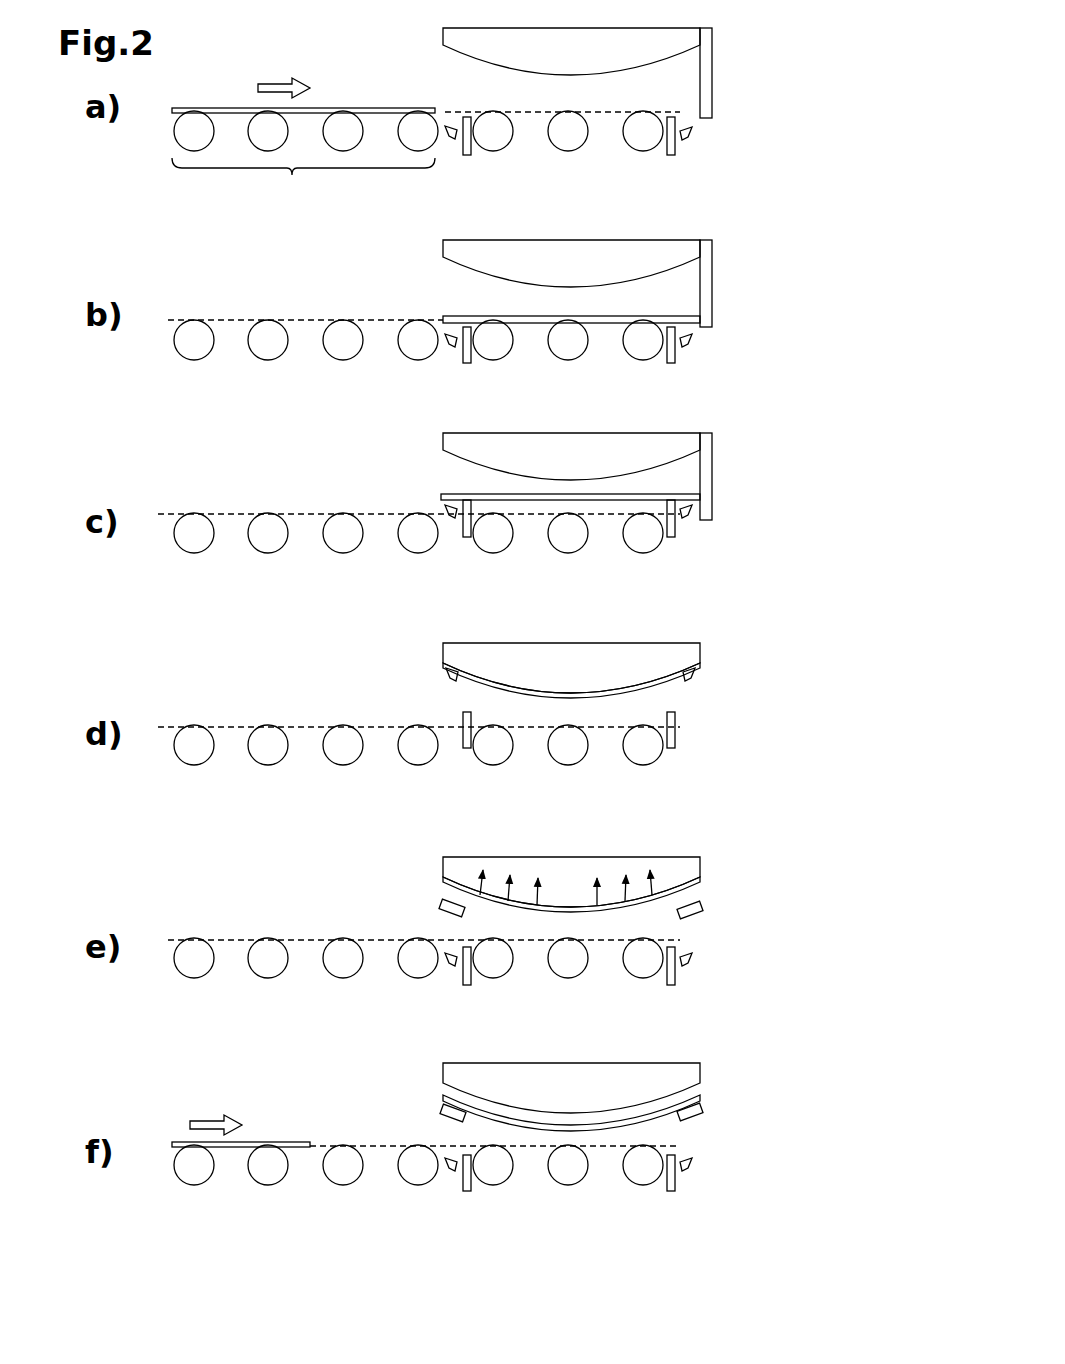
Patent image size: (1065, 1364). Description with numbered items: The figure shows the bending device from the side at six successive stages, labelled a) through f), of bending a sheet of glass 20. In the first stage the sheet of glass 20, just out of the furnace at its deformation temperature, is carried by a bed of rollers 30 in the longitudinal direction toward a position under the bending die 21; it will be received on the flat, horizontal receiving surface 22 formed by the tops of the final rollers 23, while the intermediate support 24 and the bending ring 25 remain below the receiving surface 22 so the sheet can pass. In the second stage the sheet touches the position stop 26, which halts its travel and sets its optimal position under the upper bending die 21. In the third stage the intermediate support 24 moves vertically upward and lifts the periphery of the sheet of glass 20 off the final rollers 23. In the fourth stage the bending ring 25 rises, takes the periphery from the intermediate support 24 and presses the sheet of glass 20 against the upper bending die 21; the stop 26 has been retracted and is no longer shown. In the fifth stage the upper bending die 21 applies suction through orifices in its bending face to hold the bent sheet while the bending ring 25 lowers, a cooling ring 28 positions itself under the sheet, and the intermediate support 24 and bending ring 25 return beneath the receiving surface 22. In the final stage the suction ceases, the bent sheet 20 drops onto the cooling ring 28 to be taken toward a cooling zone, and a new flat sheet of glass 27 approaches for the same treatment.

The sheet of glass 20 is at (326, 105).
The bending die 21 is at (571, 570).
The receiving surface 22 is at (600, 108).
The final rollers 23 is at (493, 140).
The intermediate support 24 is at (468, 155).
The bending ring 25 is at (455, 126).
The position stop 26 is at (712, 280).
The new flat sheet of glass 27 is at (264, 1140).
The cooling ring 28 is at (440, 905).
The bed of rollers 30 is at (305, 648).